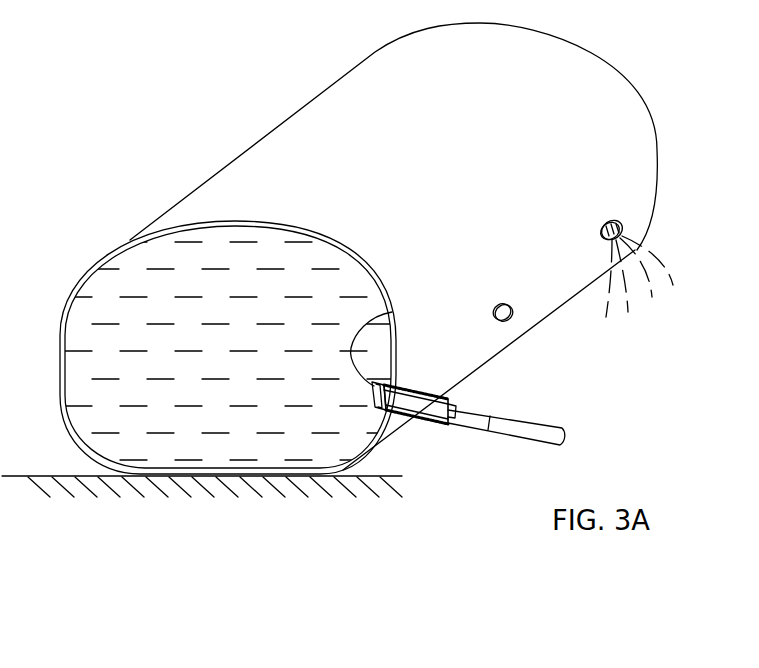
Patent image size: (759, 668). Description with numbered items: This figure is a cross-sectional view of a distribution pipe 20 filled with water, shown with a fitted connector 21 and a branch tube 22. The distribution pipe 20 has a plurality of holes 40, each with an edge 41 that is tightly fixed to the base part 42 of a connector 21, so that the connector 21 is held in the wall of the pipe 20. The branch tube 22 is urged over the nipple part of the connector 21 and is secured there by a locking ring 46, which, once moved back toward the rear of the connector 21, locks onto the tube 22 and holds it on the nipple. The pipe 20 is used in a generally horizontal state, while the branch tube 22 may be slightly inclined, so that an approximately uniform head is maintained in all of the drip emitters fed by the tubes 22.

The distribution pipe 20 is at (248, 148).
The connector 21 is at (398, 388).
The branch tube 22 is at (533, 432).
The hole 40 is at (500, 304).
The edge 41 is at (510, 314).
The base part 42 is at (393, 311).
The locking ring 46 is at (445, 405).